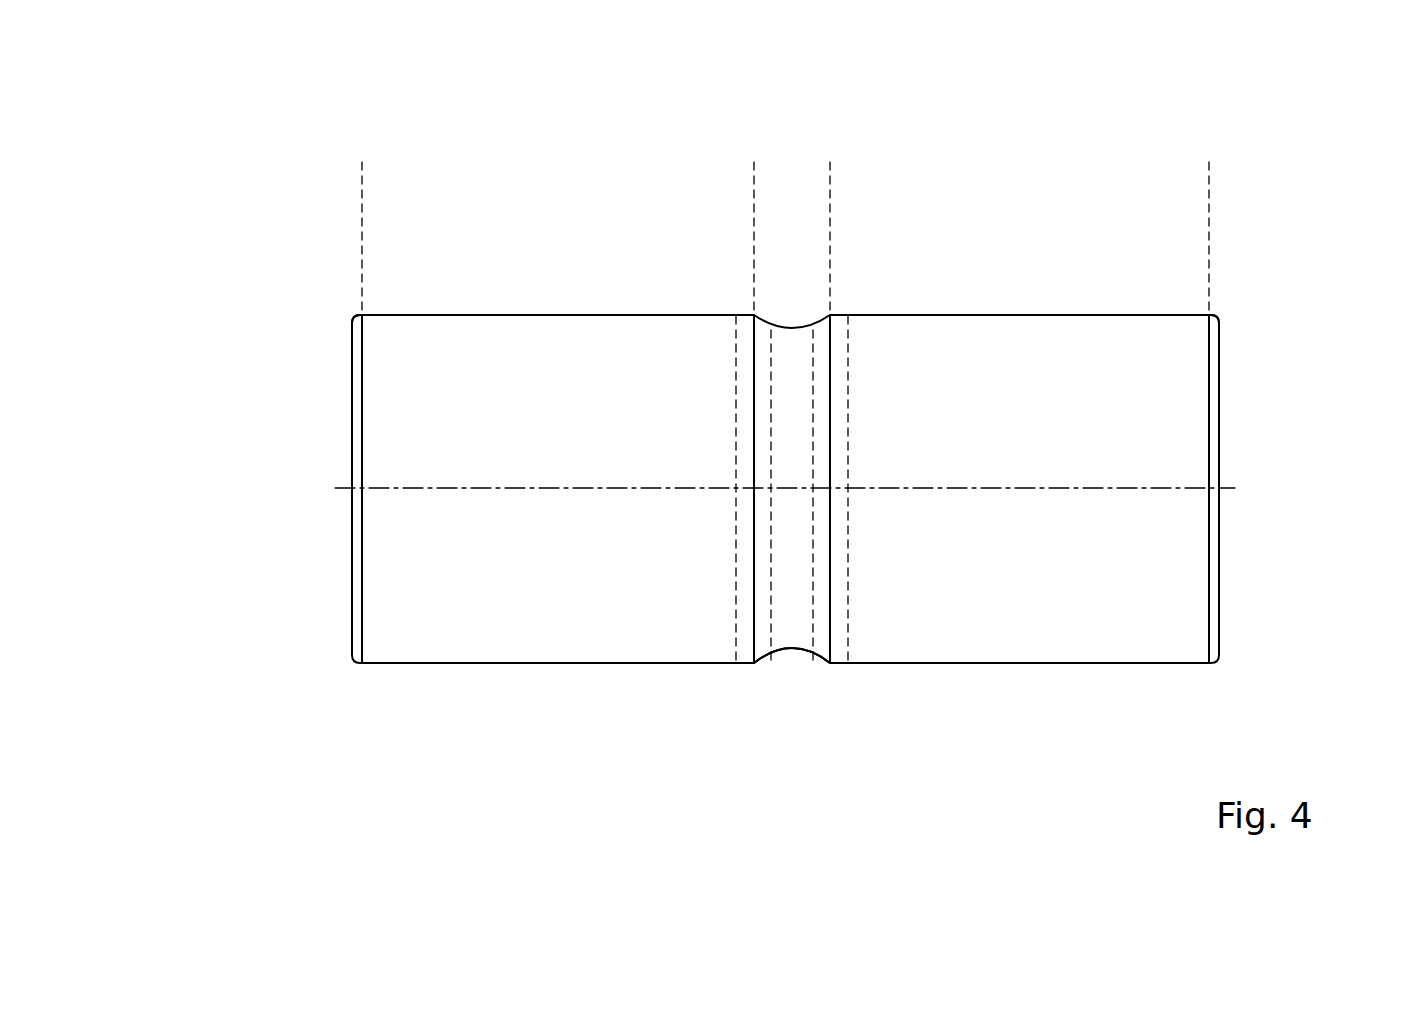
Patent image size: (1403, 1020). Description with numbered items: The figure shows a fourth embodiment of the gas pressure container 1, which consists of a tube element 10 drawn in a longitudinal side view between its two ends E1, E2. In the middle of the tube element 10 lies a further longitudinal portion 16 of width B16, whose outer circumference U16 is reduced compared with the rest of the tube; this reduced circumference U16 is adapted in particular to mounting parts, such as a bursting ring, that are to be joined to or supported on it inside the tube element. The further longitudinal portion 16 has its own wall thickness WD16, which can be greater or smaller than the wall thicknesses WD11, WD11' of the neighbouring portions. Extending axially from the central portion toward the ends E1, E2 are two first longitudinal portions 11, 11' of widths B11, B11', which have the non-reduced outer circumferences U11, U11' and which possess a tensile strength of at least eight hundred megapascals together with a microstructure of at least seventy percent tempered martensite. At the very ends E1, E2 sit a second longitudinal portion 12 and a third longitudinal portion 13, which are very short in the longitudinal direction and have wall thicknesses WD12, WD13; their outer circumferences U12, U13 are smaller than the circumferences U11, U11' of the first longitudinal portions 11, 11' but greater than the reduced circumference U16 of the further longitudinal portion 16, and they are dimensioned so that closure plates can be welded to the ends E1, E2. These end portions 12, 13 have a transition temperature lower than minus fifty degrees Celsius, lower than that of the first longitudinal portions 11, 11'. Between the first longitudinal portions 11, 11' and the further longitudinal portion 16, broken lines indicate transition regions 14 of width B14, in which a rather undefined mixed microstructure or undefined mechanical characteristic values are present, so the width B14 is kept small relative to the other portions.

The gas pressure container 1 is at (890, 113).
The tube element 10 is at (866, 669).
The first longitudinal portion 11 is at (558, 629).
The first longitudinal portion 11' is at (1019, 629).
The second longitudinal portion 12 is at (357, 380).
The third longitudinal portion 13 is at (1216, 385).
The transition region 14 is at (748, 622).
The further longitudinal portion 16 is at (775, 405).
The outer circumference of the first longitudinal portion U11 is at (566, 732).
The outer circumference of the first longitudinal portion U11' is at (1046, 732).
The outer circumference of the second longitudinal portion U12 is at (357, 312).
The outer circumference of the third longitudinal portion U13 is at (1215, 312).
The outer circumference of the further longitudinal portion U16 is at (792, 648).
The width of the first longitudinal portion B11 is at (558, 137).
The width of the first longitudinal portion B11' is at (1019, 137).
The width of the further longitudinal portion B16 is at (830, 161).
The width of the transition portion B14 is at (800, 435).
The wall thickness of the first longitudinal portion WD11 is at (541, 679).
The wall thickness of the first longitudinal portion WD11' is at (1008, 680).
The wall thickness of the second longitudinal portion WD12 is at (378, 638).
The wall thickness of the third longitudinal portion WD13 is at (1193, 640).
The wall thickness of the further longitudinal portion WD16 is at (801, 620).
The first end E1 is at (318, 503).
The second end E2 is at (1281, 503).